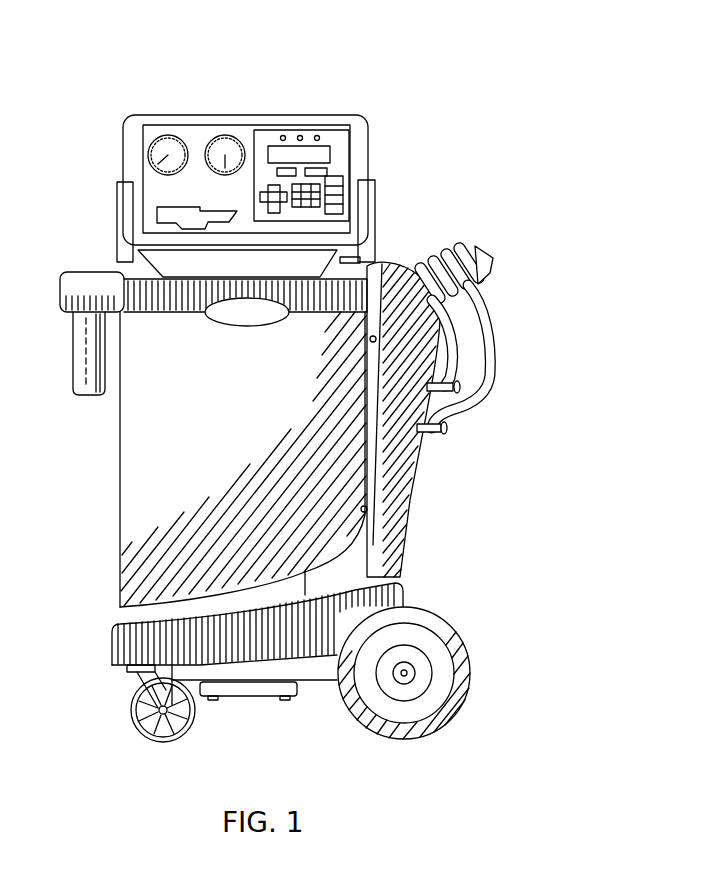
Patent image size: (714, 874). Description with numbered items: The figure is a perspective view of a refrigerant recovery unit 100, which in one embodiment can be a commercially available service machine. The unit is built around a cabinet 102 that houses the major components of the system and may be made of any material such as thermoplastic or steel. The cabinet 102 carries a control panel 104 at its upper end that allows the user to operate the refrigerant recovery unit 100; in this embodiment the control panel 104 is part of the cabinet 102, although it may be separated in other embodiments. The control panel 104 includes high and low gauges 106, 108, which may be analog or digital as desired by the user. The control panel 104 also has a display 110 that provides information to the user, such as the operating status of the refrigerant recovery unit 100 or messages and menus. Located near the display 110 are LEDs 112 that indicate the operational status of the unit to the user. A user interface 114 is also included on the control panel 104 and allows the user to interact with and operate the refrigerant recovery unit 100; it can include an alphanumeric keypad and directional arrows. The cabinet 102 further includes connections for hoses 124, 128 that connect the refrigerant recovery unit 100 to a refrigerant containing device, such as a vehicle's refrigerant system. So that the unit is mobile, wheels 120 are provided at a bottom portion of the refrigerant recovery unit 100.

The refrigerant recovery unit 100 is at (500, 172).
The cabinet 102 is at (178, 474).
The control panel 104 is at (248, 128).
The high gauge 106 is at (216, 137).
The low gauge 108 is at (163, 137).
The display 110 is at (332, 152).
The LEDs 112 is at (320, 136).
The user interface 114 is at (345, 192).
The wheels 120 is at (443, 658).
The hose 124 is at (460, 328).
The hose 128 is at (487, 377).